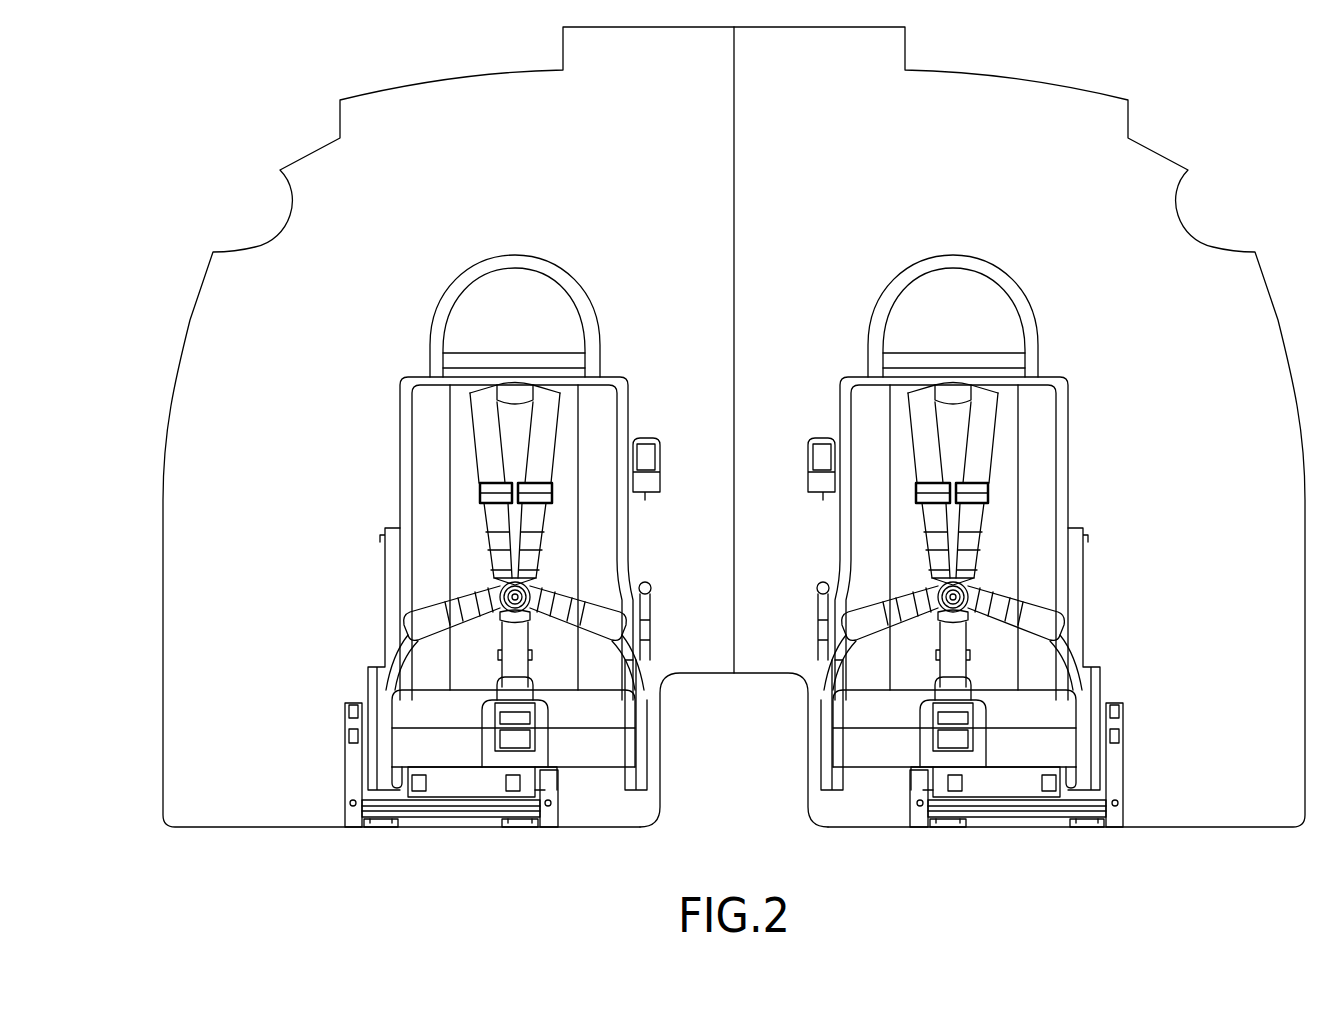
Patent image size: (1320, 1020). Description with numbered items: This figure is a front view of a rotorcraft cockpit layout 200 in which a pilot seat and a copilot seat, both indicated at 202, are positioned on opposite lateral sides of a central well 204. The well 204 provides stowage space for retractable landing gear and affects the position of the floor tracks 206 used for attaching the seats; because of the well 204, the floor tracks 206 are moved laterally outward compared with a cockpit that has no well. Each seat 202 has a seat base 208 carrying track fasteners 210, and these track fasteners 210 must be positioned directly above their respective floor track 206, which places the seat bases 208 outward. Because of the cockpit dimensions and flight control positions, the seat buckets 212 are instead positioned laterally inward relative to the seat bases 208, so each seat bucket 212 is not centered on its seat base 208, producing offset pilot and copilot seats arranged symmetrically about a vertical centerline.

The rotorcraft cockpit layout 200 is at (447, 52).
The pilot seat and copilot seat 202 is at (407, 323).
The well 204 is at (721, 826).
The floor tracks 206 is at (377, 828).
The seat bases 208 is at (356, 776).
The track fasteners 210 is at (353, 828).
The seat buckets 212 is at (400, 478).